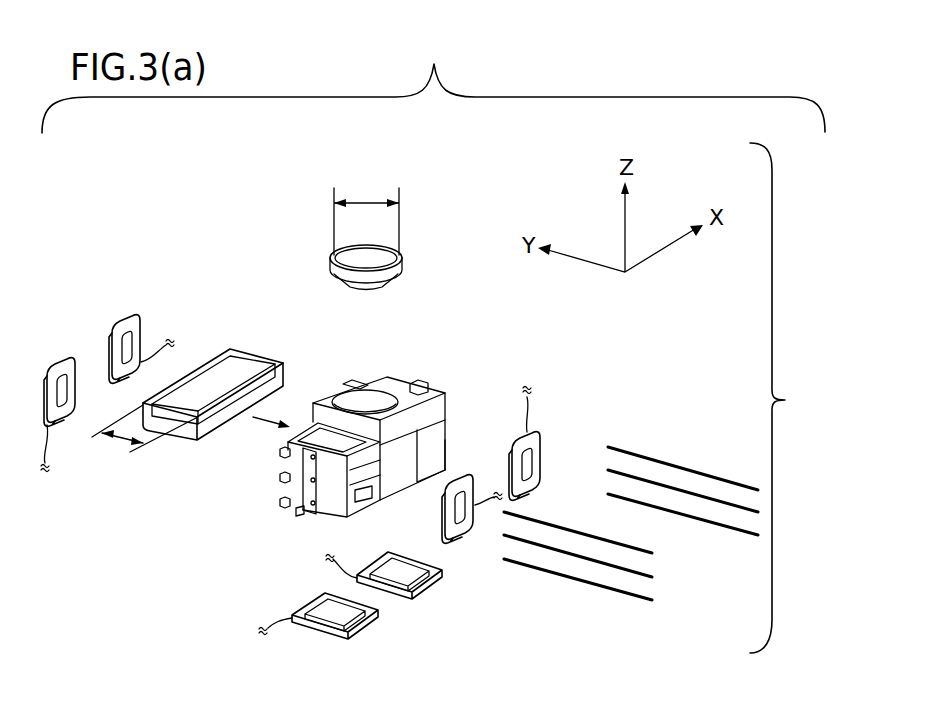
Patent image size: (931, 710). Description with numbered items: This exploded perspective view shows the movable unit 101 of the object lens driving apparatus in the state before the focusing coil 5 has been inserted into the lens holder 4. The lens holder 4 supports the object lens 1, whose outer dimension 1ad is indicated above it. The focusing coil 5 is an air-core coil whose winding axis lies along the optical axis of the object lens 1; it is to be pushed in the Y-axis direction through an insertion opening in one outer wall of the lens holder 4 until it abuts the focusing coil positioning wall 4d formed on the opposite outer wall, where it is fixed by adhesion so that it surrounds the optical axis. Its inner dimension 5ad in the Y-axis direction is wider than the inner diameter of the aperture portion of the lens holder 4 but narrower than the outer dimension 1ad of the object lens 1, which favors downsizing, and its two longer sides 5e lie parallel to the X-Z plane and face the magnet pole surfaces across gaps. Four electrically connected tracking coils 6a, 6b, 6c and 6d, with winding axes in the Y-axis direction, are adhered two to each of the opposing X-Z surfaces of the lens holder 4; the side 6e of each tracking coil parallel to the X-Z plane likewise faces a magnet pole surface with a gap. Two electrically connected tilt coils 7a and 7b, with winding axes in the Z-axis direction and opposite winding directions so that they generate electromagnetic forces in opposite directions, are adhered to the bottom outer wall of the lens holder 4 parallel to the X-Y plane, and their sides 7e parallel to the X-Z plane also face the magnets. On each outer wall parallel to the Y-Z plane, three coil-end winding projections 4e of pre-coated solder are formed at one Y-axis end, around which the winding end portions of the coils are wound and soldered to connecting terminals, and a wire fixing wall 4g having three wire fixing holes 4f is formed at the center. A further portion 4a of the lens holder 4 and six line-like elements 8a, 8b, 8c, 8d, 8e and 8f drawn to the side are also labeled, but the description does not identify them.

The movable unit 101 is at (829, 411).
The object lens 1 is at (374, 264).
The outer dimension of the object lens 1ad is at (366, 216).
The lens holder 4 is at (360, 380).
The frame portion of lens holder 4a is at (316, 430).
The focusing coil positioning wall 4d is at (397, 447).
The coil-end winding projections 4e is at (282, 501).
The wire fixing holes 4f is at (317, 458).
The wire fixing wall 4g is at (300, 514).
The focusing coil 5 is at (213, 405).
The longer sides of the focusing coil 5e is at (262, 392).
The inner dimension of the focusing coil 5ad is at (144, 436).
The tracking coil 6a is at (120, 322).
The tracking coil 6b is at (55, 362).
The tracking coil 6c is at (545, 452).
The tracking coil 6d is at (472, 478).
The side of tracking coil parallel to the X-Z plane 6e is at (465, 530).
The tilt coil 7a is at (320, 626).
The tilt coil 7b is at (406, 590).
The sides of tilt coil parallel to the X-Z plane 7e is at (372, 568).
The wire 8a is at (630, 448).
The wire 8b is at (676, 490).
The wire 8c is at (727, 525).
The wire 8d is at (622, 540).
The wire 8e is at (574, 553).
The wire 8f is at (532, 568).